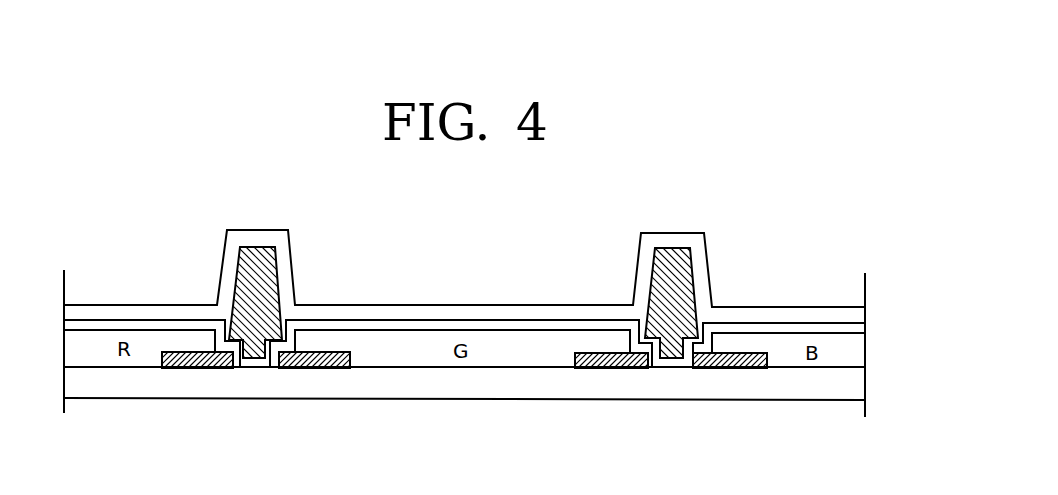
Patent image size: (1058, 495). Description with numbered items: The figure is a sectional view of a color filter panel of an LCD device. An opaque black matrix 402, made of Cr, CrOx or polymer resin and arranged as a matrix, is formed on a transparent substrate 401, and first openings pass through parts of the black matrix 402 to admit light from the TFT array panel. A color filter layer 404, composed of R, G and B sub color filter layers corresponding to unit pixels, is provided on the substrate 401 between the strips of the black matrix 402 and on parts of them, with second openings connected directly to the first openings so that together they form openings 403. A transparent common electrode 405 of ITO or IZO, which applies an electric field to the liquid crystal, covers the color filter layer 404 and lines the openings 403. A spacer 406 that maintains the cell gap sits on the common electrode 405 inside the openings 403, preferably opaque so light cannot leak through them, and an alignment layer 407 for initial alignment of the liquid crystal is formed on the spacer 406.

The transparent substrate 401 is at (853, 392).
The black matrix 402 is at (727, 368).
The openings 403 is at (668, 362).
The color filter layer 404 is at (853, 355).
The common electrode 405 is at (853, 328).
The spacer 406 is at (683, 262).
The alignment layer 407 is at (853, 312).